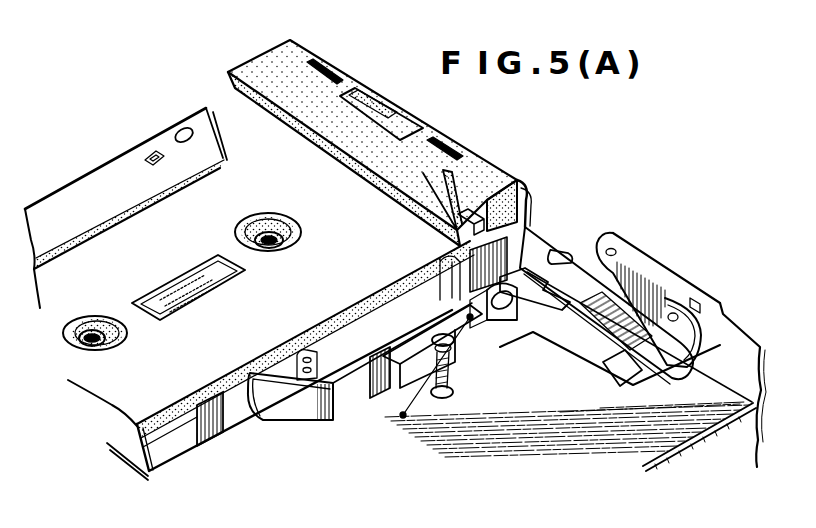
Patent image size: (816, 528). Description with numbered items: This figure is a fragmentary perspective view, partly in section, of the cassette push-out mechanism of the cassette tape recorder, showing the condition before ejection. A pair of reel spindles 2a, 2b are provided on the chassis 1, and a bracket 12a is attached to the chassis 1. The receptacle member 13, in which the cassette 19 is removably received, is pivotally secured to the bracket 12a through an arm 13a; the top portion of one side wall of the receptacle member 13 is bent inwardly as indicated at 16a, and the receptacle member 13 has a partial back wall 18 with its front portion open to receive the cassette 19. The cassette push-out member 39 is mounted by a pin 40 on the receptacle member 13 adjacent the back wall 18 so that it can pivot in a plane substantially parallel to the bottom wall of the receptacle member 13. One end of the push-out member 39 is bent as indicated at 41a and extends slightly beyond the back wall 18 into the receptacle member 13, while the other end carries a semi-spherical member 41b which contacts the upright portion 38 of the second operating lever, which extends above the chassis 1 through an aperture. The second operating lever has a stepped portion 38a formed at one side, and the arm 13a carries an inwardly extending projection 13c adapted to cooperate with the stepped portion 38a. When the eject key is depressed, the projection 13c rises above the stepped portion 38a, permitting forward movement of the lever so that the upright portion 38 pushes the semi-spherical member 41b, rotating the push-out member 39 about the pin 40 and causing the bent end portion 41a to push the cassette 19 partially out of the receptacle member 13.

The chassis 1 is at (695, 418).
The reel spindle 2a is at (262, 220).
The reel spindle 2b is at (92, 322).
The bracket 12a is at (656, 262).
The receptacle member 13 is at (318, 112).
The arm 13a is at (517, 270).
The projection 13c is at (515, 333).
The inwardly bent top portion of side wall 16a is at (381, 153).
The back wall 18 is at (197, 433).
The cassette 19 is at (230, 115).
The upright portion 38 is at (517, 345).
The stepped portion 38a is at (518, 268).
The cassette push-out member 39 is at (363, 395).
The pin 40 is at (430, 327).
The bent end portion 41a is at (293, 397).
The semi-spherical member 41b is at (500, 333).